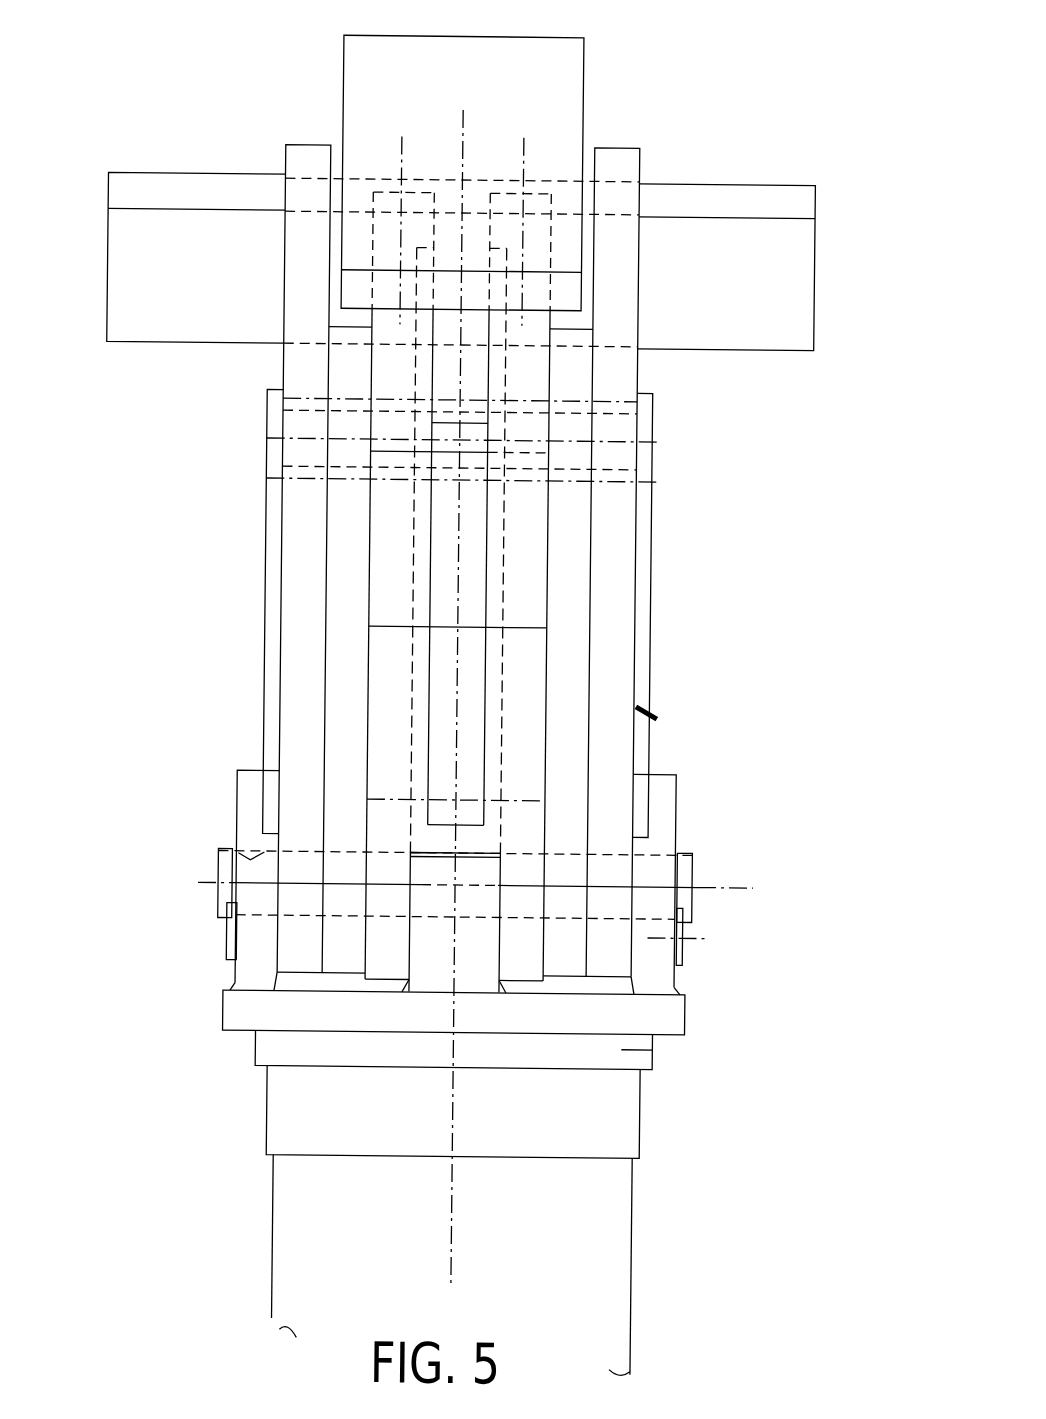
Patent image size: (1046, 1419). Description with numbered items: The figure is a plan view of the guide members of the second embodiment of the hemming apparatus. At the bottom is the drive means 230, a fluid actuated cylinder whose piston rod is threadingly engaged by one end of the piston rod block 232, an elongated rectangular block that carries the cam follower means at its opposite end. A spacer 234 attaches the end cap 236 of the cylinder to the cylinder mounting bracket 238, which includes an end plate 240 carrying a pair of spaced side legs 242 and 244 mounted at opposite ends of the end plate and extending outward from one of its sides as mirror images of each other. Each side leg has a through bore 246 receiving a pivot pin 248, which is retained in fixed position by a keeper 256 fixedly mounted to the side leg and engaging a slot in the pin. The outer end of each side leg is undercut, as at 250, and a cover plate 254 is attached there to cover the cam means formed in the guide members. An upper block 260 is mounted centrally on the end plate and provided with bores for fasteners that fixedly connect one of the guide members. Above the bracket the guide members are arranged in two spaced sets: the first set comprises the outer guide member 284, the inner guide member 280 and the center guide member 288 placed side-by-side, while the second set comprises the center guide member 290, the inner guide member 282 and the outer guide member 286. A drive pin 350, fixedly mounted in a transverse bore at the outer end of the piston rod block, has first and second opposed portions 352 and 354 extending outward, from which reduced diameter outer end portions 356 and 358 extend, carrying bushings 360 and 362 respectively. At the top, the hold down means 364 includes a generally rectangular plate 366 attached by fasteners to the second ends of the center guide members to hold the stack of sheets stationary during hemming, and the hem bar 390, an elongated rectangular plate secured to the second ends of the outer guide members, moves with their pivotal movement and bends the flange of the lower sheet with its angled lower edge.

The drive means 230 is at (316, 1200).
The piston rod block 232 is at (503, 557).
The spacer 234 is at (660, 1050).
The end cap 236 is at (316, 1133).
The cylinder mounting bracket 238 is at (692, 1010).
The end plate 240 is at (281, 1010).
The side leg 242 is at (273, 789).
The side leg 244 is at (660, 790).
The through bore 246 is at (228, 845).
The pivot pin 248 is at (218, 875).
The undercut end 250 is at (250, 783).
The cover plate 254 is at (274, 594).
The keeper 256 is at (220, 922).
The upper block 260 is at (437, 941).
The first inner guide member 280 is at (352, 651).
The first inner guide member 282 is at (589, 662).
The outer guide member 284 is at (310, 513).
The outer guide member 286 is at (657, 717).
The center guide member 288 is at (387, 424).
The center guide member 290 is at (556, 618).
The drive pin 350 is at (532, 399).
The first opposed portion 352 is at (392, 398).
The second opposed portion 354 is at (575, 383).
The outer end portion 356 is at (310, 467).
The outer end portion 358 is at (607, 469).
The bushing 360 is at (313, 403).
The bushing 362 is at (608, 403).
The hold down means 364 is at (565, 108).
The plate 366 is at (371, 103).
The hem bar 390 is at (232, 237).